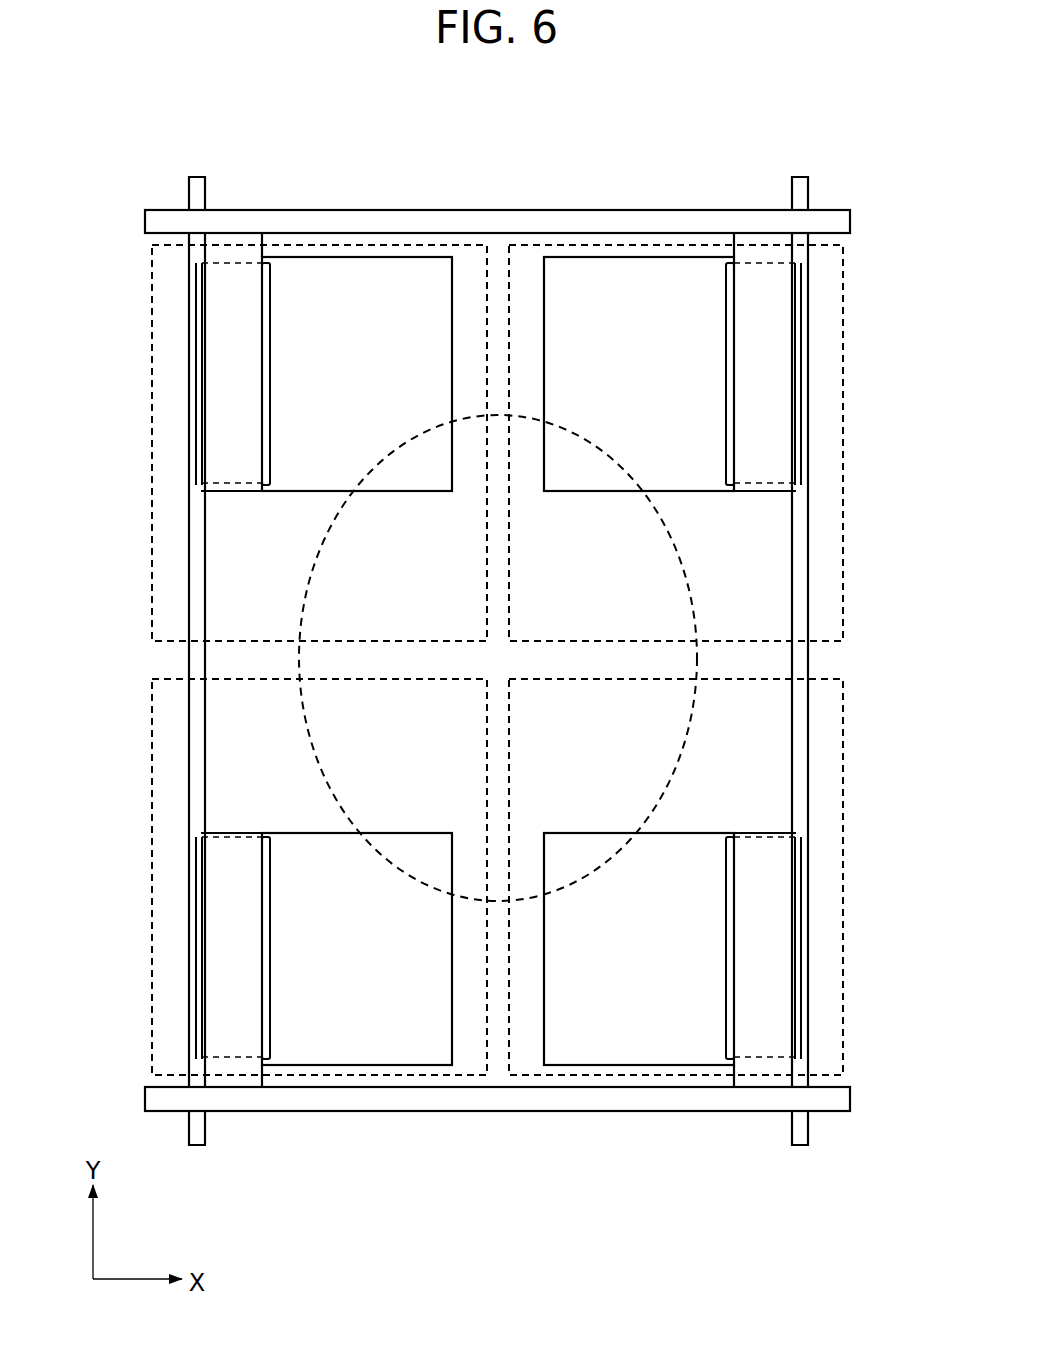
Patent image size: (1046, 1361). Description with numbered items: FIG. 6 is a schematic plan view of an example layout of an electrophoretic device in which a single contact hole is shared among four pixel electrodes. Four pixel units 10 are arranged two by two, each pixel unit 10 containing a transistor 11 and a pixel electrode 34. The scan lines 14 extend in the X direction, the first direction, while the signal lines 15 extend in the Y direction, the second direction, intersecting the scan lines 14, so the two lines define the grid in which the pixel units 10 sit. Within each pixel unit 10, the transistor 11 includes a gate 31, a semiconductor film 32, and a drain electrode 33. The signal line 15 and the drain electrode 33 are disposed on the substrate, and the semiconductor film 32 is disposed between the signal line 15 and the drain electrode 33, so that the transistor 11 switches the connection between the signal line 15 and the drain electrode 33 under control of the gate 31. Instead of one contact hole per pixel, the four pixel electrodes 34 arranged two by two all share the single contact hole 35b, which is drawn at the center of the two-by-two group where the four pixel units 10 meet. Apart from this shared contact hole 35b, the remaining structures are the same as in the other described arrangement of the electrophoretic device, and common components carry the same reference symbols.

The pixel unit 10 is at (145, 198).
The transistor 11 is at (185, 433).
The scan line 14 is at (145, 224).
The signal line 15 is at (197, 552).
The gate 31 is at (232, 387).
The semiconductor film 32 is at (272, 342).
The drain electrode 33 is at (328, 362).
The pixel electrode 34 is at (402, 233).
The contact hole 35b is at (513, 415).